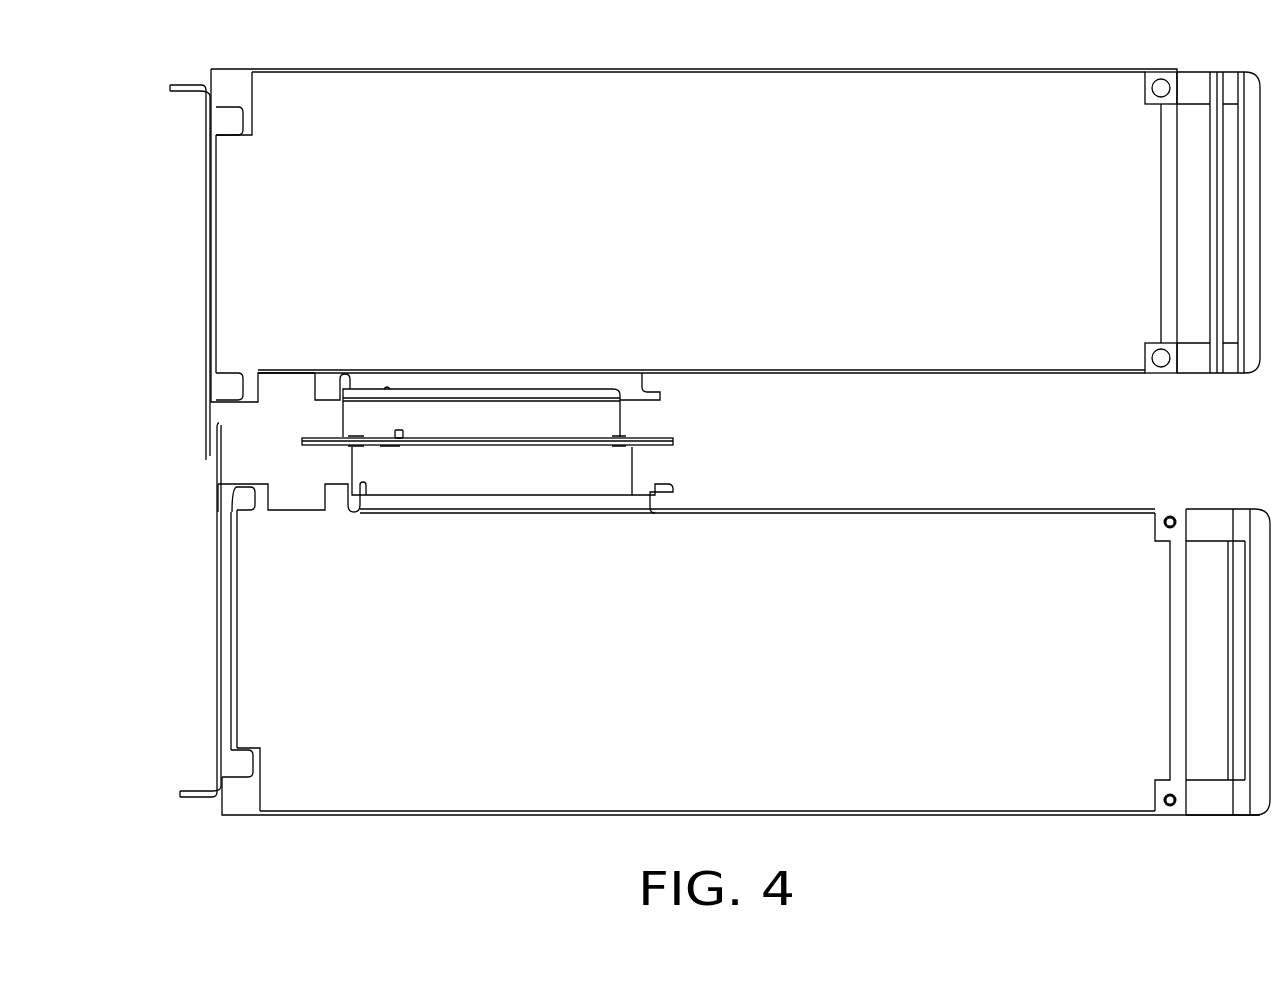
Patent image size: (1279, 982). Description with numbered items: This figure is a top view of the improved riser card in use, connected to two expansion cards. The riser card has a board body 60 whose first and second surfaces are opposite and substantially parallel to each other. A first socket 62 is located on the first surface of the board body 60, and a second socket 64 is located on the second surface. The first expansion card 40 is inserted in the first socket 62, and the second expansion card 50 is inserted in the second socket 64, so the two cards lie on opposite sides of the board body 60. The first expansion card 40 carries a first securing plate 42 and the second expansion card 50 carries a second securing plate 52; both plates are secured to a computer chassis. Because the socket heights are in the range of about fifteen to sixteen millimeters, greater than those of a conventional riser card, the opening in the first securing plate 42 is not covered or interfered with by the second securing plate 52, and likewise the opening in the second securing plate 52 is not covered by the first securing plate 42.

The first expansion card 40 is at (603, 126).
The first securing plate 42 is at (206, 193).
The second expansion card 50 is at (369, 782).
The second securing plate 52 is at (214, 632).
The board body 60 is at (672, 443).
The first socket 62 is at (608, 416).
The second socket 64 is at (618, 468).